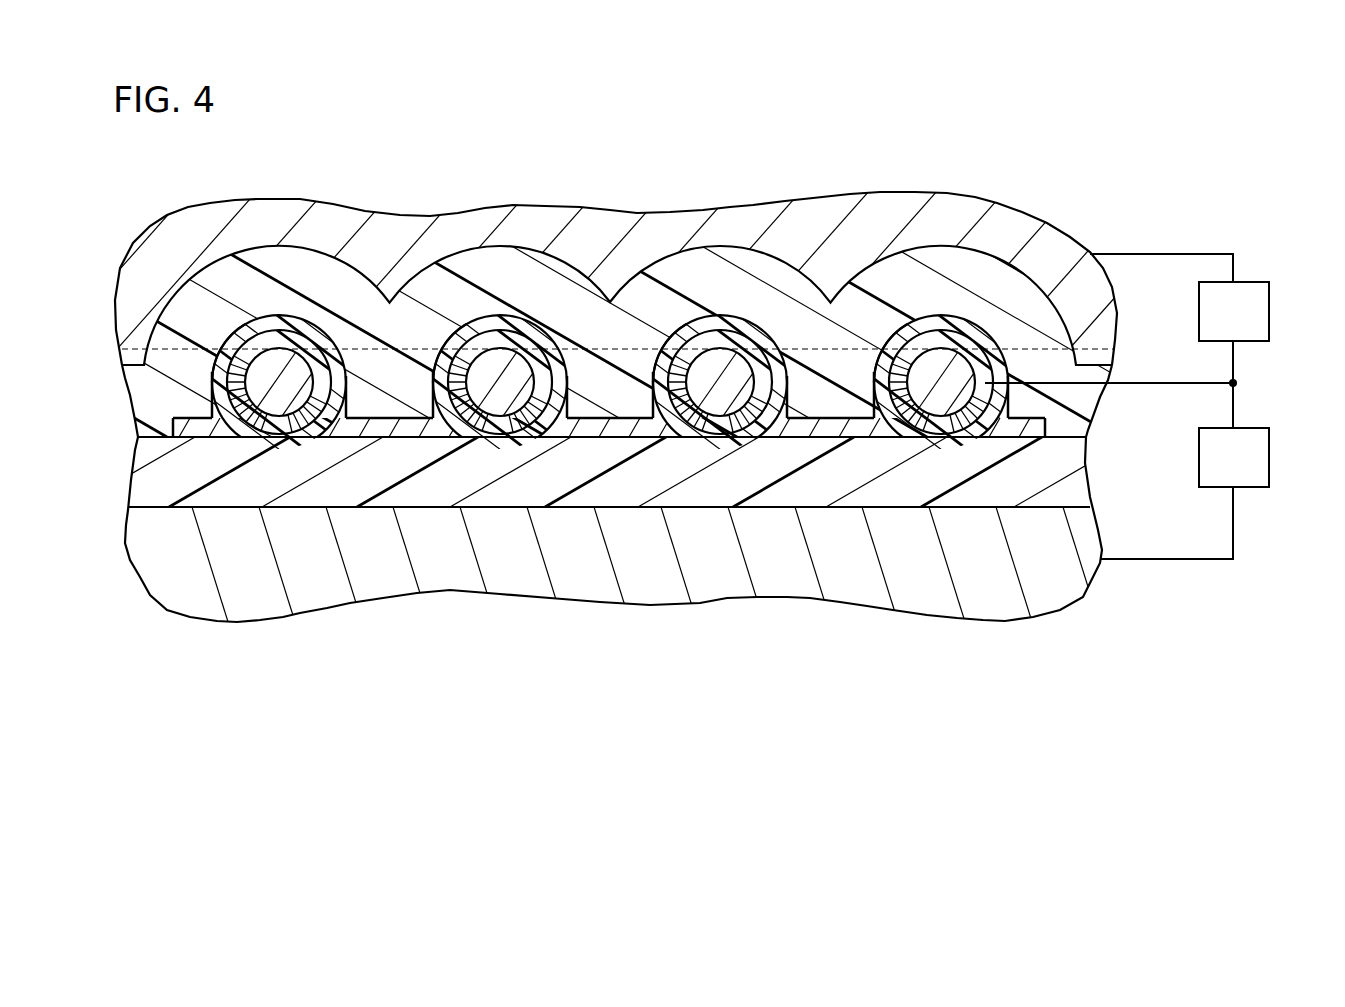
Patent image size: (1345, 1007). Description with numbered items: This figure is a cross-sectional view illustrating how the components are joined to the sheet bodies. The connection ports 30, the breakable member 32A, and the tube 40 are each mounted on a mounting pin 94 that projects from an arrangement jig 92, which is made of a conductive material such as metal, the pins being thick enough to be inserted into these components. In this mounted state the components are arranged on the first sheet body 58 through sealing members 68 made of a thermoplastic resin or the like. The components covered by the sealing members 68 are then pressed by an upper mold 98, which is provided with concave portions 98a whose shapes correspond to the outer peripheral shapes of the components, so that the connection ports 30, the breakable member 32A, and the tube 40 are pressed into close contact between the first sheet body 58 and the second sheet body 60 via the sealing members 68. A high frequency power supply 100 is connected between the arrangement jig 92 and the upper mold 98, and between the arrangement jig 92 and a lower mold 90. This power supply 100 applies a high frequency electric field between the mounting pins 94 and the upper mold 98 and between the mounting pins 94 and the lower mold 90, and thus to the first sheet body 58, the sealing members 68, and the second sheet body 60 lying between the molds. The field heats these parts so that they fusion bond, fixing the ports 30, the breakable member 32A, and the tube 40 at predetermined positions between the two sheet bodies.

The connection port 30 is at (272, 338).
The tube 40 is at (492, 342).
The breakable member 32A is at (712, 340).
The mounting pin 94 is at (298, 367).
The upper mold 98 is at (170, 258).
The concave portion 98a is at (235, 336).
The arrangement jig 92 is at (143, 335).
The second sheet body 60 is at (158, 401).
The first sheet body 58 is at (162, 478).
The sealing member 68 is at (593, 425).
The lower mold 90 is at (633, 583).
The high frequency power supply 100 is at (1270, 309).